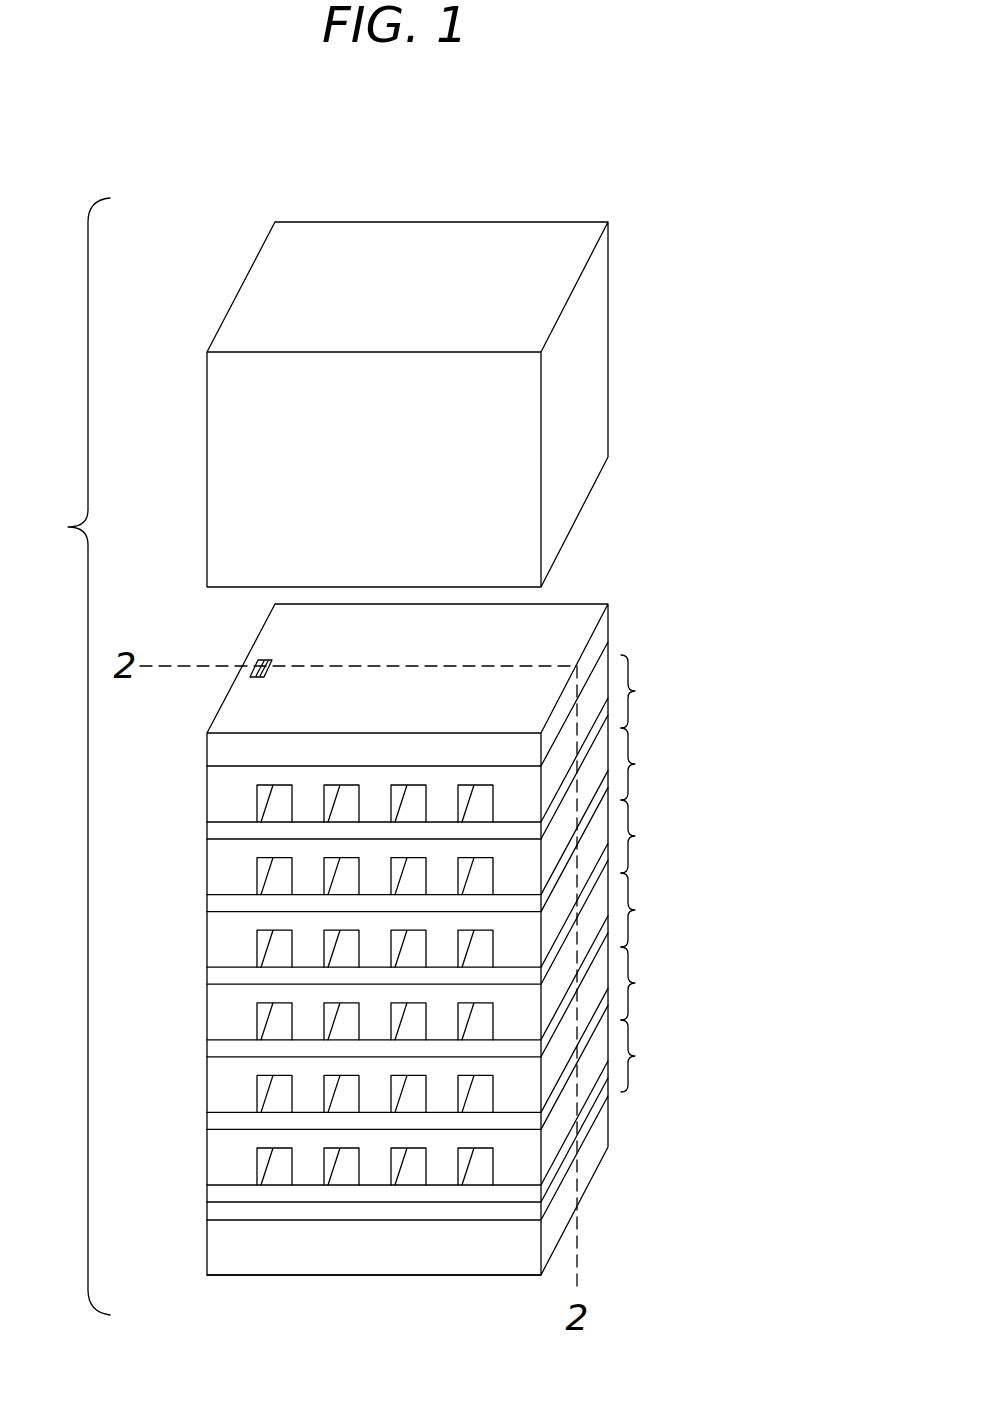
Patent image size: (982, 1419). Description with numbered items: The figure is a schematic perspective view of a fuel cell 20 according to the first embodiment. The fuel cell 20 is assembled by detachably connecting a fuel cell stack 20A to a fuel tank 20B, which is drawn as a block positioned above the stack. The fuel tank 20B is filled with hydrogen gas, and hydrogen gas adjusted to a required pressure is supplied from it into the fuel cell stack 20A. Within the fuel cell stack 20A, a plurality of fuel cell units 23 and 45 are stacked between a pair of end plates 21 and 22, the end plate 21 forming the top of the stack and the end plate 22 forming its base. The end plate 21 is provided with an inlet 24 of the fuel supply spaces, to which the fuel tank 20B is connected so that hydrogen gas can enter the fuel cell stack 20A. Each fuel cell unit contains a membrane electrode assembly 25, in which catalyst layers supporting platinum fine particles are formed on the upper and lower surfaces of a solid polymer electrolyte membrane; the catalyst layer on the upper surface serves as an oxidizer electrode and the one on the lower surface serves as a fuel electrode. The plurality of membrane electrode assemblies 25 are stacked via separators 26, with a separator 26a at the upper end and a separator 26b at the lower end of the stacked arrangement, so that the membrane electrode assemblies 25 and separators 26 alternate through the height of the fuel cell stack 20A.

The fuel cell 20 is at (557, 168).
The fuel cell stack 20A is at (628, 625).
The fuel tank 20B is at (627, 283).
The end plate 21 is at (217, 750).
The end plate 22 is at (217, 1252).
The fuel cell unit 23 is at (645, 837).
The inlet 24 is at (262, 660).
The membrane electrode assembly 25 is at (217, 830).
The separator 26 is at (217, 873).
The separator 26a is at (217, 795).
The separator 26b is at (217, 1211).
The fuel cell unit 45 is at (645, 1056).